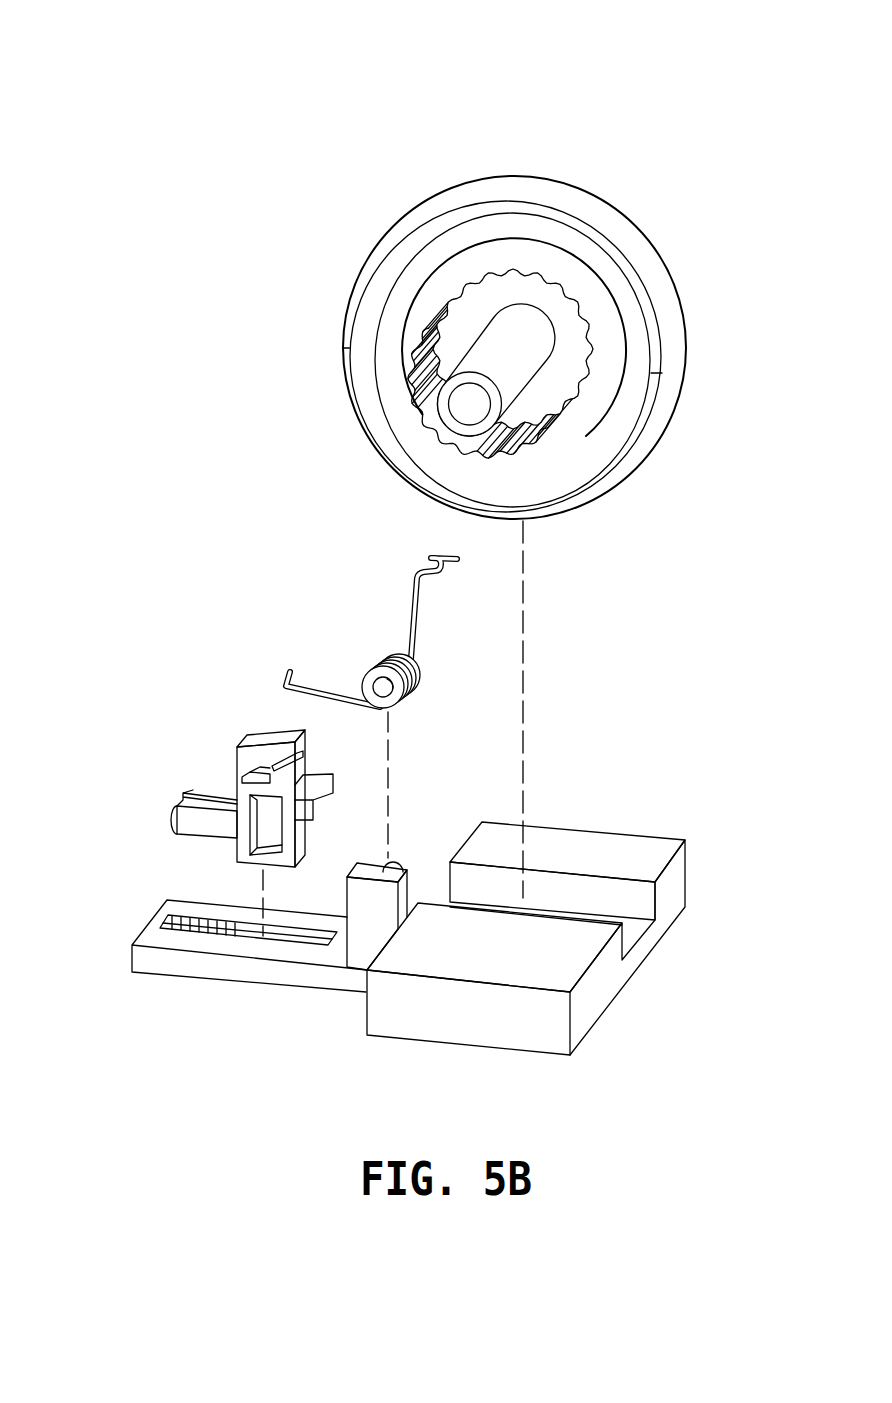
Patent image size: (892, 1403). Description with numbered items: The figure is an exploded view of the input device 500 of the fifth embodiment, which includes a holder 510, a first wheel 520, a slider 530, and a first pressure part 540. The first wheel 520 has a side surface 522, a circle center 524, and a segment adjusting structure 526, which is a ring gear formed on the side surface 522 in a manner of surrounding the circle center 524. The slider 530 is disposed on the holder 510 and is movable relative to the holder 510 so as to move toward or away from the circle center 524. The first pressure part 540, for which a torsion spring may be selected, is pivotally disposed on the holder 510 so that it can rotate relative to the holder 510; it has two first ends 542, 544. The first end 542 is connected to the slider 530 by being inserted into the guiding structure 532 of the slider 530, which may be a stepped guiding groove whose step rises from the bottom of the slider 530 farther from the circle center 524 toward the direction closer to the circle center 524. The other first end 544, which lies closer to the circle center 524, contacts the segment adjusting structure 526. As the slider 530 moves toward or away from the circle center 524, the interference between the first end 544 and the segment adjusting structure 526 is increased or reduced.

The input device 500 is at (278, 168).
The holder 510 is at (231, 970).
The first wheel 520 is at (681, 90).
The side surface 522 is at (597, 300).
The circle center 524 is at (528, 324).
The segment adjusting structure 526 is at (487, 277).
The slider 530 is at (207, 823).
The guiding structure 532 is at (262, 777).
The first pressure part 540 is at (257, 553).
The first end 542 is at (337, 687).
The first end 544 is at (423, 560).